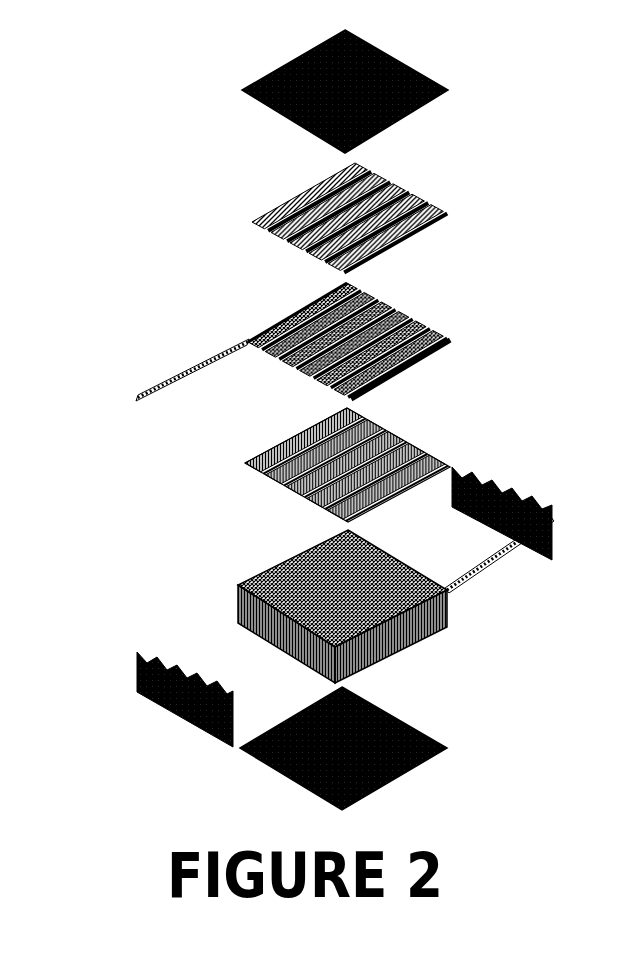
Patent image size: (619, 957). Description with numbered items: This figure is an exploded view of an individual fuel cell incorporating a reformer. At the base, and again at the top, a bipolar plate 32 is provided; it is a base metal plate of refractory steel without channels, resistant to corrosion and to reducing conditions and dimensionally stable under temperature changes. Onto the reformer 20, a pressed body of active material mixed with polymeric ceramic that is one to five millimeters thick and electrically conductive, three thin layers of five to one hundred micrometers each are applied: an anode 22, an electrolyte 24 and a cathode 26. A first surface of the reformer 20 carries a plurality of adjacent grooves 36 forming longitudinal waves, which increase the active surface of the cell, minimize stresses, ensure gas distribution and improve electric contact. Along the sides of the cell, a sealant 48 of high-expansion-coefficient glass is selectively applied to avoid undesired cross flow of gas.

The bipolar plate 32 is at (329, 105).
The cathode 26 is at (430, 205).
The electrolyte 24 is at (423, 327).
The anode 22 is at (397, 438).
The reformer 20 is at (447, 620).
The grooves 36 is at (349, 579).
The sealant 48 is at (497, 507).